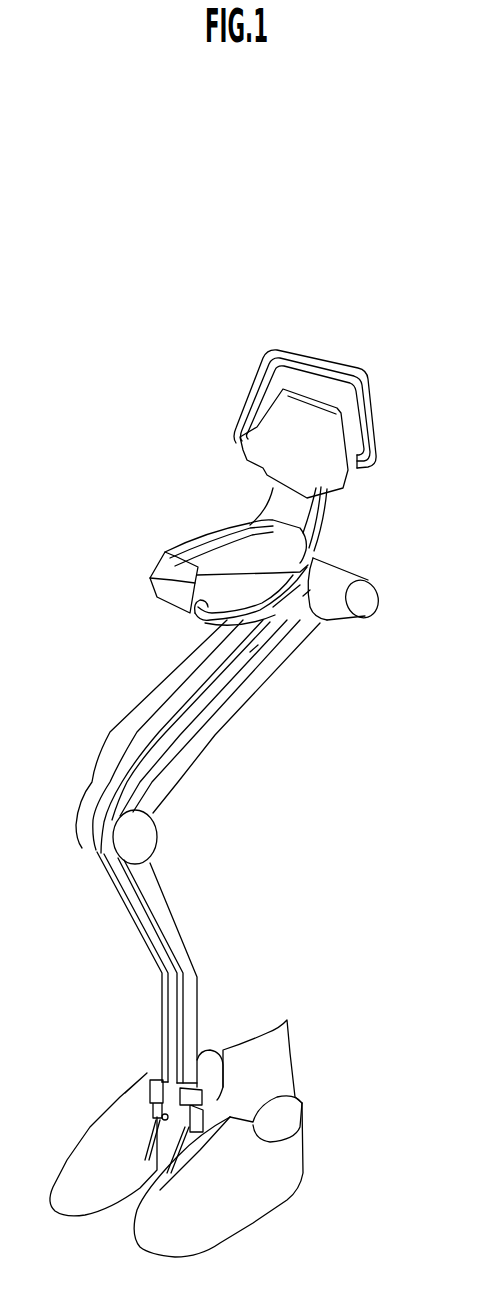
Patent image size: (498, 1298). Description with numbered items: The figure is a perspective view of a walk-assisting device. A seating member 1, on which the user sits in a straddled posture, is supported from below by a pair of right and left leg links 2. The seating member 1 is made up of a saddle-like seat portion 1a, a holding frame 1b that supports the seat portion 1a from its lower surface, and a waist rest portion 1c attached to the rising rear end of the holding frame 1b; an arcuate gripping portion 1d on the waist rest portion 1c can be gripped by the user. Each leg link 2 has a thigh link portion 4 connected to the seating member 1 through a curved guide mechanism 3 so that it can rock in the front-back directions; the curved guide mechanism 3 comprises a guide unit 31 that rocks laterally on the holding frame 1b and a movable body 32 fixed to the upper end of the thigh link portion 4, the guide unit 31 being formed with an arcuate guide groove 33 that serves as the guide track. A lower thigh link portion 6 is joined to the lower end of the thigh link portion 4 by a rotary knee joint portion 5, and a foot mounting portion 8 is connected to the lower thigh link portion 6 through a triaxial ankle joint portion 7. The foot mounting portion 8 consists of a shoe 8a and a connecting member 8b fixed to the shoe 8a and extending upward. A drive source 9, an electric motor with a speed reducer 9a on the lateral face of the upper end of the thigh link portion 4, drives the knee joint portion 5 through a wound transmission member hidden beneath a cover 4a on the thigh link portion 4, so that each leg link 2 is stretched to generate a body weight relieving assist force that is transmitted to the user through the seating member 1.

The seating member 1 is at (164, 536).
The seat portion 1a is at (237, 537).
The holding frame 1b is at (163, 570).
The waist rest portion 1c is at (257, 412).
The arcuate gripping portion 1d is at (324, 351).
The leg link 2 is at (158, 735).
The curved guide mechanism 3 is at (276, 608).
The guide unit 31 is at (207, 628).
The movable body 32 is at (303, 596).
The arcuate guide groove 33 is at (258, 645).
The thigh link portion 4 is at (243, 713).
The cover 4a is at (102, 765).
The knee joint portion 5 is at (100, 850).
The lower thigh link portion 6 is at (180, 990).
The ankle joint portion 7 is at (163, 1128).
The foot mounting portion 8 is at (120, 1233).
The shoe 8a is at (288, 1036).
The connecting member 8b is at (155, 1156).
The drive source 9 is at (372, 598).
The speed reducer 9a is at (323, 552).